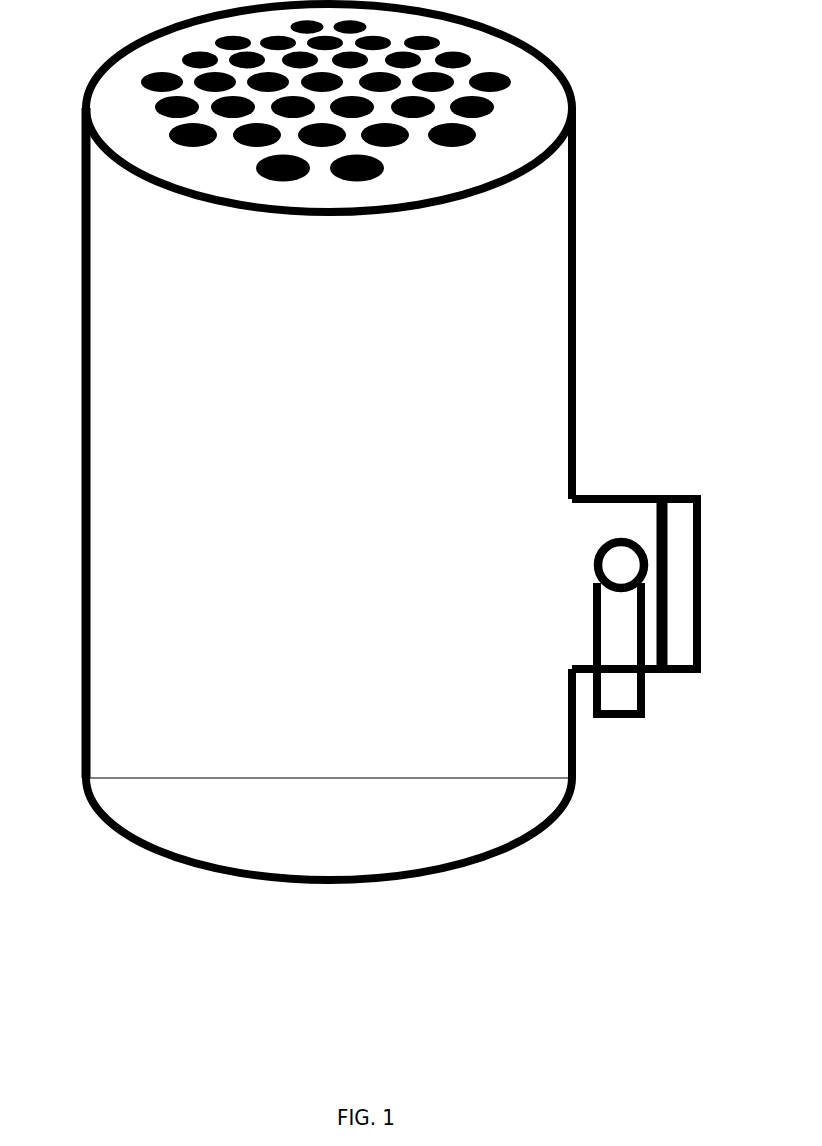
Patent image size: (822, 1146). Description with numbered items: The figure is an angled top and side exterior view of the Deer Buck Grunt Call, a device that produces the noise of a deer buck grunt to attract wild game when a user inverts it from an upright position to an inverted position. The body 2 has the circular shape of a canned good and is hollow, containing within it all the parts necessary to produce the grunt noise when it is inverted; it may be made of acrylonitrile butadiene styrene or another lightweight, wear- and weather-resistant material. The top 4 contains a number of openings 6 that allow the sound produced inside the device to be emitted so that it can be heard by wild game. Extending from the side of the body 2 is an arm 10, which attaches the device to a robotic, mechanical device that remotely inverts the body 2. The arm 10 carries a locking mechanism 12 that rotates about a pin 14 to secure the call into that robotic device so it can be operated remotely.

The body 2 is at (555, 340).
The top 4 is at (108, 105).
The openings 6 is at (470, 60).
The arm 10 is at (682, 612).
The locking mechanism 12 is at (628, 693).
The pin 14 is at (610, 558).